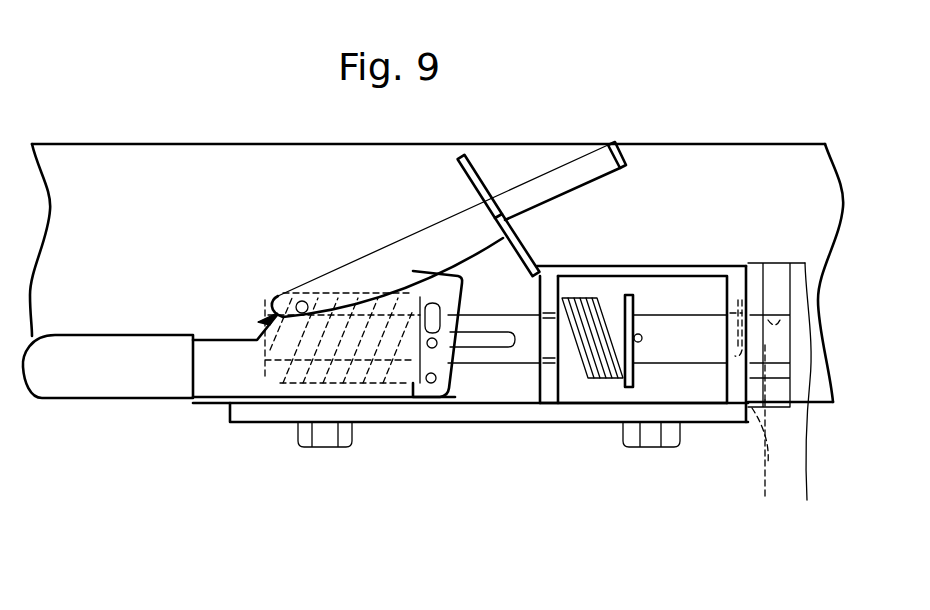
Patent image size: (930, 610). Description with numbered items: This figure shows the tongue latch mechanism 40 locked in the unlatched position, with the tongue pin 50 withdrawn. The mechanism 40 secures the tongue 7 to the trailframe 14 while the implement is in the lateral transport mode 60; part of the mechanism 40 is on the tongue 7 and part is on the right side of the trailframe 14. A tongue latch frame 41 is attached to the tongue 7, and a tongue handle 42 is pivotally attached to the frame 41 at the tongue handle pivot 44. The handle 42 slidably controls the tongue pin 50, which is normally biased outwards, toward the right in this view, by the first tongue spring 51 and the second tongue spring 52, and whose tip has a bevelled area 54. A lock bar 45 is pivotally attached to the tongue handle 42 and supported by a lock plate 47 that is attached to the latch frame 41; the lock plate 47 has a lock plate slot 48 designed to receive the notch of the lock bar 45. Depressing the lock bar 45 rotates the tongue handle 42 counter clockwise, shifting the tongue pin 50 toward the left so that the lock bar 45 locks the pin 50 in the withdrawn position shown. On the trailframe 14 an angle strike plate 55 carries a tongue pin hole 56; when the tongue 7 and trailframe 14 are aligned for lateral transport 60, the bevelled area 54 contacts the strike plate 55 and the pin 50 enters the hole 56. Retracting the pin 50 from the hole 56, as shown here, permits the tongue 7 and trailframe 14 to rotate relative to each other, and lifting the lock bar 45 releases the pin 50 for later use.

The tongue 7 is at (148, 125).
The trailframe 14 is at (755, 500).
The tongue latch mechanism 40 is at (436, 226).
The tongue latch frame 41 is at (283, 413).
The tongue handle 42 is at (108, 335).
The tongue handle pivot 44 is at (444, 402).
The lock bar 45 is at (568, 163).
The lock plate 47 is at (462, 153).
The lock plate slot 48 is at (481, 175).
The tongue pin 50 is at (650, 330).
The first tongue spring 51 is at (377, 402).
The second tongue spring 52 is at (600, 380).
The bevelled area 54 is at (742, 300).
The angle strike plate 55 is at (768, 463).
The tongue pin hole 56 is at (780, 320).
The lateral transport mode 60 is at (673, 142).